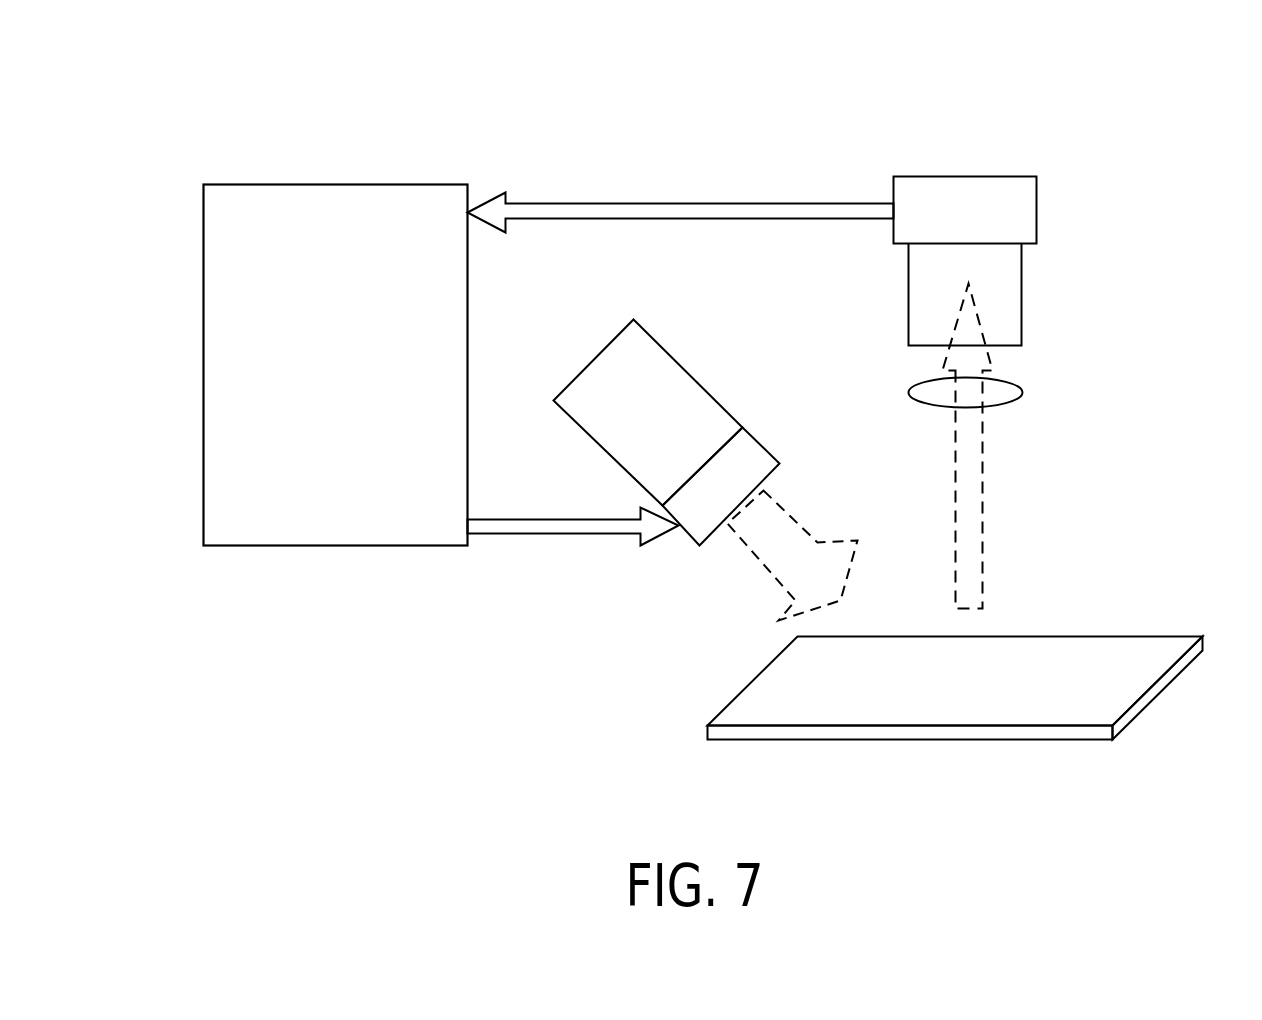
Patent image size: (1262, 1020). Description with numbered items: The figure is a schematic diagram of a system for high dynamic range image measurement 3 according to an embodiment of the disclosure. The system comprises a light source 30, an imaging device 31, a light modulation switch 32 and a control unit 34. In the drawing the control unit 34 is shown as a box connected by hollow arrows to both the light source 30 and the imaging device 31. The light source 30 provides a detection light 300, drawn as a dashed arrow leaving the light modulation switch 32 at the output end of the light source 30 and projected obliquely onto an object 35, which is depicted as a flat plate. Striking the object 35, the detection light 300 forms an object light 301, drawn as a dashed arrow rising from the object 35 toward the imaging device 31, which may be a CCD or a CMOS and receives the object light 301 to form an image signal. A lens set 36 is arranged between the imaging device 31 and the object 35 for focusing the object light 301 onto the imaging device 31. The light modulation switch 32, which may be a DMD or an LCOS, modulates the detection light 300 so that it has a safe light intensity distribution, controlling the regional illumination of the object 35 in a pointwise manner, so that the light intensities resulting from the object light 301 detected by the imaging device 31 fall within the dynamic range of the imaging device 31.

The system for high dynamic range image measurement 3 is at (150, 118).
The light source 30 is at (556, 345).
The imaging device 31 is at (890, 145).
The light modulation switch 32 is at (743, 443).
The control unit 34 is at (397, 193).
The object 35 is at (1168, 638).
The lens set 36 is at (1012, 392).
The detection light 300 is at (807, 533).
The object light 301 is at (973, 507).